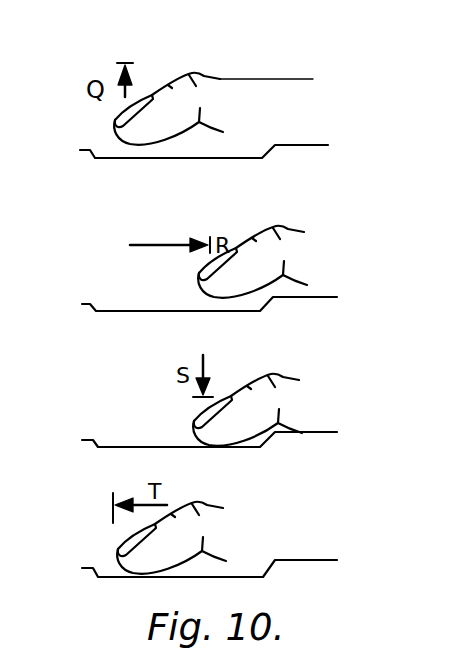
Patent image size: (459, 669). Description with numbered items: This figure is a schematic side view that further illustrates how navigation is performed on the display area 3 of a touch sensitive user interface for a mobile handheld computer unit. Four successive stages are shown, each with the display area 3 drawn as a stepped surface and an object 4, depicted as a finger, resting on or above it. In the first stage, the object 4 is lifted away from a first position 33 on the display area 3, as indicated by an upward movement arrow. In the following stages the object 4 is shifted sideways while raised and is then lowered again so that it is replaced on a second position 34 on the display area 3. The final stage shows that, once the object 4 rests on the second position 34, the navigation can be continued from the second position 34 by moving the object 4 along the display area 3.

The display area 3 is at (110, 158).
The object 4 is at (217, 103).
The first position 33 is at (143, 158).
The second position 34 is at (230, 447).